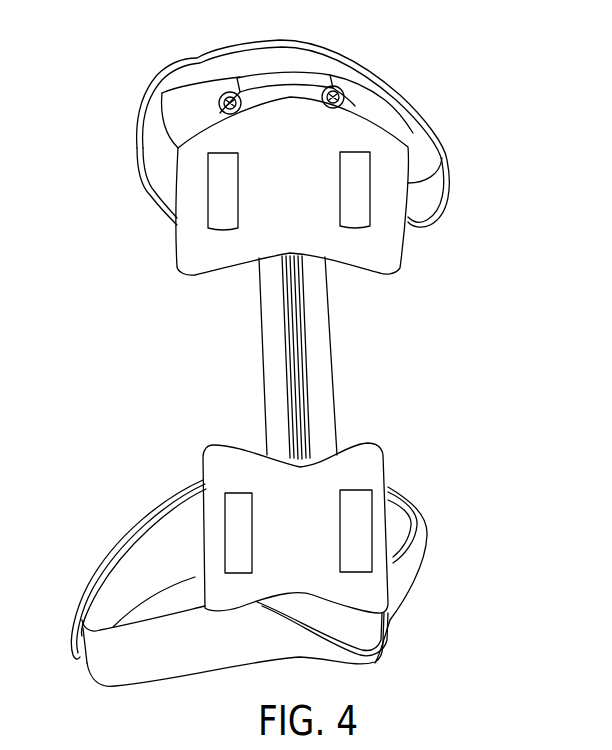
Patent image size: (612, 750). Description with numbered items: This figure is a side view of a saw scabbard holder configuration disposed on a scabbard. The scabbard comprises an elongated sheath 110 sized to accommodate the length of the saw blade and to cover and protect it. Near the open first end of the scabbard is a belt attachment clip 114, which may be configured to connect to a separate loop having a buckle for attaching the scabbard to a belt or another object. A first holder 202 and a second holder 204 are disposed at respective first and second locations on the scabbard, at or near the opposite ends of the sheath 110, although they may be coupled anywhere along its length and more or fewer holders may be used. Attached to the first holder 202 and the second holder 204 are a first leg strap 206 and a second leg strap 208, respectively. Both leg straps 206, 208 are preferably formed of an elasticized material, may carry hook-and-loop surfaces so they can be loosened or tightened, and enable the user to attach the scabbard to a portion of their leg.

The elongated sheath 110 is at (322, 341).
The belt attachment clip 114 is at (297, 72).
The first holder 202 is at (412, 135).
The second holder 204 is at (382, 440).
The first leg strap 206 is at (152, 143).
The second leg strap 208 is at (418, 548).